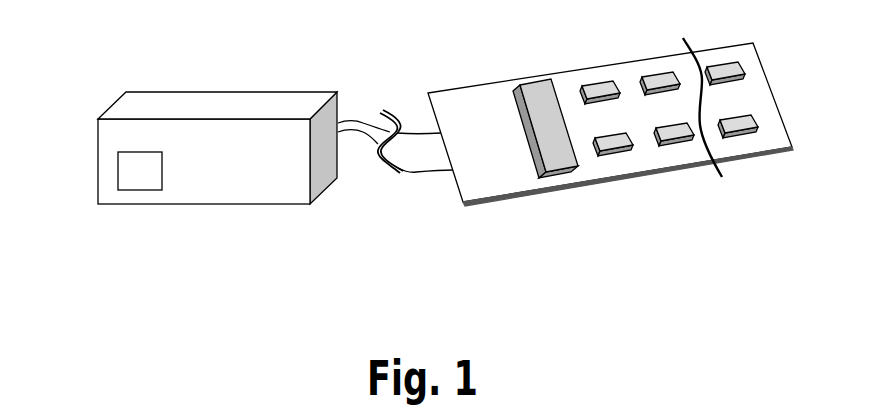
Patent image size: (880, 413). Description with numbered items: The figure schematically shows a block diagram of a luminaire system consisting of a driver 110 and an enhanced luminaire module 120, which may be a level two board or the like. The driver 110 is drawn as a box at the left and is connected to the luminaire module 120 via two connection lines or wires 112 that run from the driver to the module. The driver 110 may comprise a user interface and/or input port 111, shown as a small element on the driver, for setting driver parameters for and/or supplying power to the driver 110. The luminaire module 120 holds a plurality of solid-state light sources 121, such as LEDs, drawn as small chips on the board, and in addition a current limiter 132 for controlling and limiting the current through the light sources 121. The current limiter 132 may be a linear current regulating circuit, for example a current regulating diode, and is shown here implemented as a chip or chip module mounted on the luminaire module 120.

The driver 110 is at (237, 204).
The user interface and/or input port 111 is at (132, 167).
The connection lines or wires 112 is at (410, 173).
The enhanced luminaire module 120 is at (492, 168).
The solid-state light sources 121 is at (677, 138).
The current limiter 132 is at (542, 110).